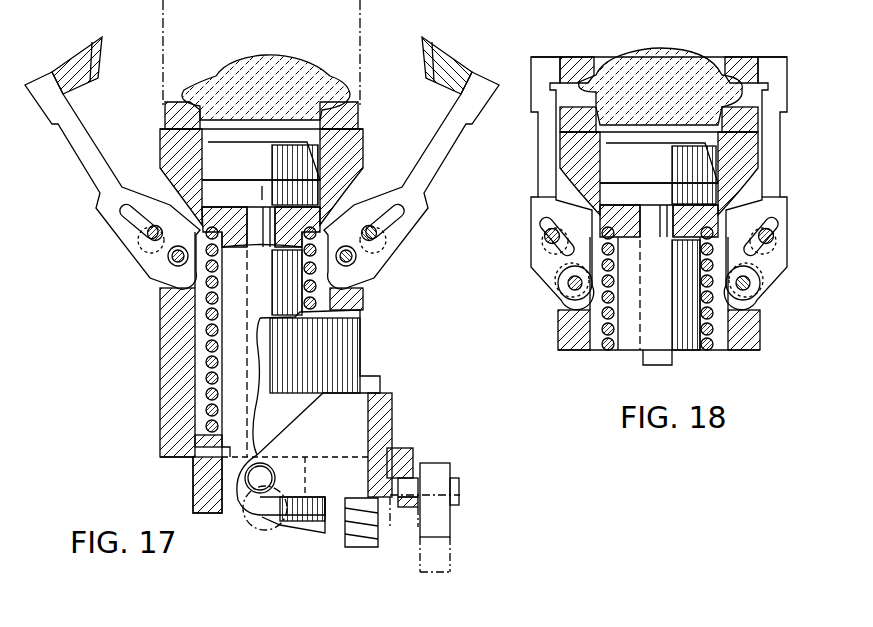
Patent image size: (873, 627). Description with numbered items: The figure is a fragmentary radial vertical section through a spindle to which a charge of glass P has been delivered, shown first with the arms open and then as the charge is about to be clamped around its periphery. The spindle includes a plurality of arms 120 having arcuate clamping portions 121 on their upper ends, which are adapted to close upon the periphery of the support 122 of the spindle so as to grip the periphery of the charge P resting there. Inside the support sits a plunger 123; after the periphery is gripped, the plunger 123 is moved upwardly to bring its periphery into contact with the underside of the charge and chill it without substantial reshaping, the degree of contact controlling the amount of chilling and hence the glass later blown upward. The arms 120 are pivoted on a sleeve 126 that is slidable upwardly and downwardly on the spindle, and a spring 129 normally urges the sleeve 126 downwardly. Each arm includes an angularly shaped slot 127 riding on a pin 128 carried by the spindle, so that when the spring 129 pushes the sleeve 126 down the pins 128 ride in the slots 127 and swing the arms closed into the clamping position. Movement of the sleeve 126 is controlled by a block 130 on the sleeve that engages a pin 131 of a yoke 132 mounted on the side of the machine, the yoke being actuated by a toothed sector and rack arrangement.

In FIG. 17, the workpiece / part P is at (255, 62).
In FIG. 18, the workpiece / part P is at (653, 62).
In FIG. 17, the arms 120 is at (92, 164).
In FIG. 18, the arms 120 is at (543, 157).
In FIG. 17, the arcuate clamping portions 121 is at (85, 52).
In FIG. 18, the arcuate clamping portions 121 is at (598, 25).
In FIG. 17, the support 122 is at (348, 120).
In FIG. 18, the support 122 is at (659, 119).
In FIG. 17, the plunger 123 is at (300, 170).
In FIG. 18, the plunger 123 is at (615, 170).
In FIG. 17, the sleeve 126 is at (172, 327).
In FIG. 18, the sleeve 126 is at (574, 331).
In FIG. 17, the angularly shaped slot 127 is at (132, 219).
In FIG. 18, the angularly shaped slot 127 is at (548, 221).
In FIG. 17, the pin 128 is at (155, 238).
In FIG. 18, the pin 128 is at (548, 237).
In FIG. 17, the spring 129 is at (207, 396).
In FIG. 18, the spring 129 is at (608, 351).
In FIG. 17, the block 130 is at (398, 452).
In FIG. 17, the pin 131 is at (408, 508).
In FIG. 17, the yoke 132 is at (440, 523).